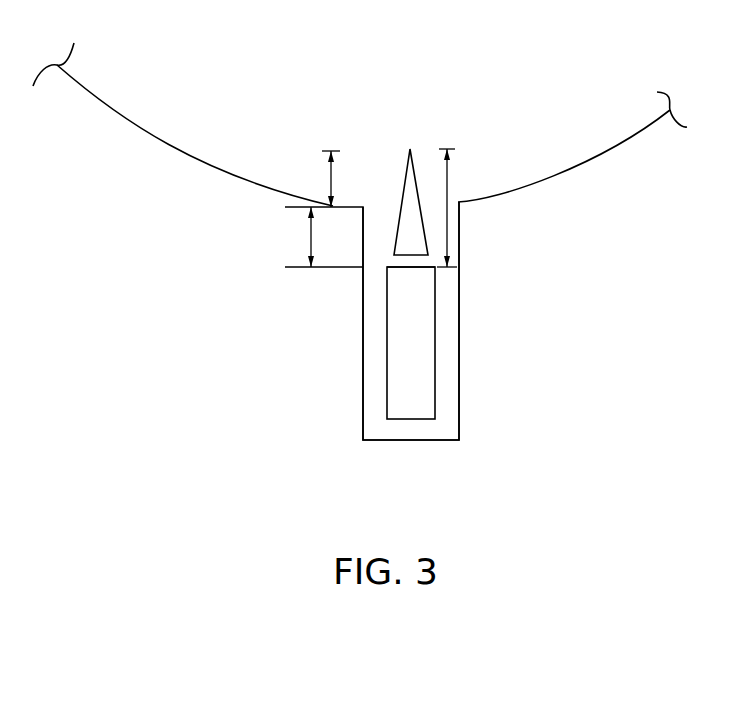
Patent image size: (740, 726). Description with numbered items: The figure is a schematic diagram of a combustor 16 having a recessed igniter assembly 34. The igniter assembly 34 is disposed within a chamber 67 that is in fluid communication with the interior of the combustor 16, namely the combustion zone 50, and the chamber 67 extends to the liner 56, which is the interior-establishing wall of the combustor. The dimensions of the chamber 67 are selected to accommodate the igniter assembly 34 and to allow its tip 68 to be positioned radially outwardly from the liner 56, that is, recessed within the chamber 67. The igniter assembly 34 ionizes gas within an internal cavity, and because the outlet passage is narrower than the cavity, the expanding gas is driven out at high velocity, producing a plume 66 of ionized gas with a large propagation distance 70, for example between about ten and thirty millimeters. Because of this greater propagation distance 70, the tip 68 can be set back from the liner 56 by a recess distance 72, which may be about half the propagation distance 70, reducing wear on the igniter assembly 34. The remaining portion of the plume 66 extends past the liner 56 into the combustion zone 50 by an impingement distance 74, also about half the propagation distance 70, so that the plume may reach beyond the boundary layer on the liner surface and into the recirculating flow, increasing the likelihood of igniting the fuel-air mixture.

The combustor 16 is at (259, 76).
The combustion zone 50 is at (475, 92).
The liner 56 is at (572, 168).
The plume 66 is at (404, 190).
The chamber 67 is at (459, 385).
The tip 68 is at (378, 264).
The igniter assembly 34 is at (435, 343).
The propagation distance 70 is at (447, 220).
The recess distance 72 is at (308, 238).
The impingement distance 74 is at (330, 173).